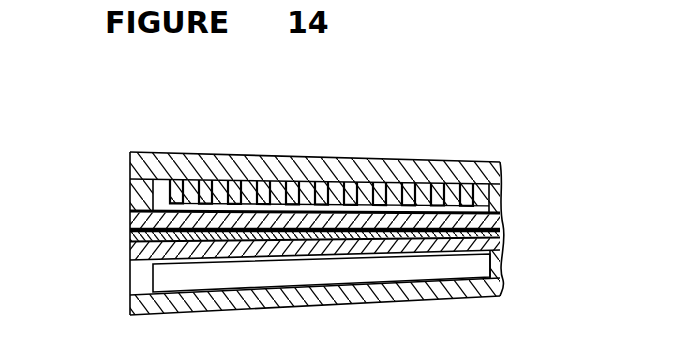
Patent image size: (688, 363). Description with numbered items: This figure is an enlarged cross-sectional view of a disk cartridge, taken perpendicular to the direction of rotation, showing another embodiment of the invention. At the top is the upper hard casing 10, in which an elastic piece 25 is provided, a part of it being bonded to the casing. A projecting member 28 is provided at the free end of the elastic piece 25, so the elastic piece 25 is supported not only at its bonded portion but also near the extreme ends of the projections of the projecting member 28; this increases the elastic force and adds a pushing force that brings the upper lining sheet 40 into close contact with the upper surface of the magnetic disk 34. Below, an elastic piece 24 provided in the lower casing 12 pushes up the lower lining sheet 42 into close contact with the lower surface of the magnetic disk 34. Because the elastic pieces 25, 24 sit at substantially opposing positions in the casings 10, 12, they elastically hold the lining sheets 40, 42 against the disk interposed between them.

The upper hard casing 10 is at (402, 172).
The elastic piece 25 is at (188, 192).
The projecting member 28 is at (263, 192).
The upper lining sheet 40 is at (332, 216).
The magnetic disk 34 is at (492, 231).
The lower lining sheet 42 is at (333, 246).
The elastic piece 24 is at (193, 277).
The lower casing 12 is at (387, 290).